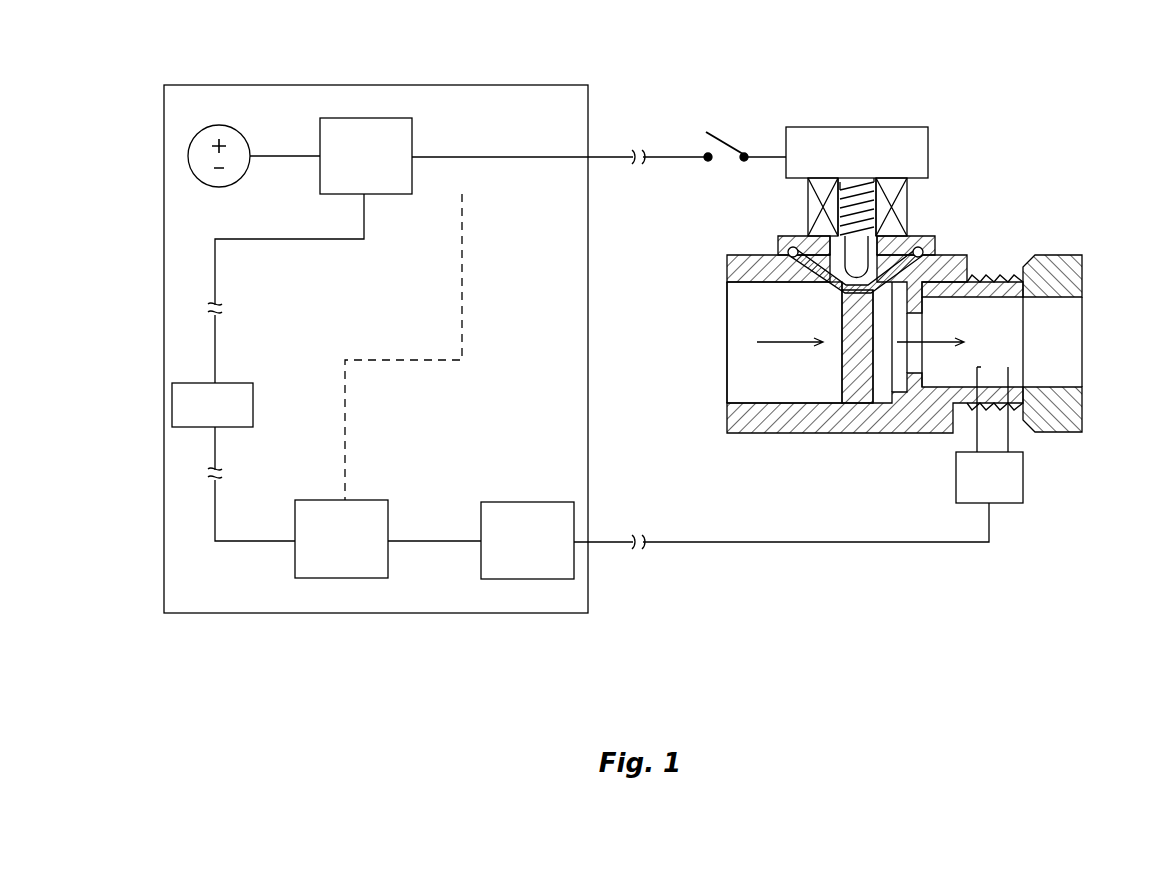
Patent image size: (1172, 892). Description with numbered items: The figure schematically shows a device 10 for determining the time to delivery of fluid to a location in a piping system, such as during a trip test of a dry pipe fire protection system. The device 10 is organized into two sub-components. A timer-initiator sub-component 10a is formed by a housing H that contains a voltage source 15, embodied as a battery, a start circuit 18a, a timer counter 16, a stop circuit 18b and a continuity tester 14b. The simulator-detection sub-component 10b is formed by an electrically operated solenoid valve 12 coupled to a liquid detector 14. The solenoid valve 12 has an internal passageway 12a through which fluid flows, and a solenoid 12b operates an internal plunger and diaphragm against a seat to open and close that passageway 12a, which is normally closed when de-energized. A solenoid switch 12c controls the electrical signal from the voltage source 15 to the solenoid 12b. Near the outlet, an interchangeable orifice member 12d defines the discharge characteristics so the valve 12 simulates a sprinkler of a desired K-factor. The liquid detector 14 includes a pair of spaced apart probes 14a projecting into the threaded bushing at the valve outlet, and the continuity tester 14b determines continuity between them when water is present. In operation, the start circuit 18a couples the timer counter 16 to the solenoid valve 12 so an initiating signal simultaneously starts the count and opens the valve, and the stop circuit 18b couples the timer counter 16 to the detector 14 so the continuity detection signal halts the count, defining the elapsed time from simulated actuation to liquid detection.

The housing H is at (322, 85).
The device 10 is at (368, 673).
The timer-initiator sub-component 10a is at (195, 625).
The simulator-detection sub-component 10b is at (723, 563).
The solenoid valve 12 is at (788, 45).
The internal passageway 12a is at (771, 376).
The solenoid 12b is at (928, 142).
The solenoid switch 12c is at (733, 138).
The orifice member 12d is at (918, 327).
The liquid detector 14 is at (1023, 470).
The probes 14a is at (1010, 378).
The continuity tester 14b is at (536, 502).
The voltage source 15 is at (250, 145).
The timer counter 16 is at (253, 408).
The start circuit 18a is at (412, 124).
The stop circuit 18b is at (372, 500).